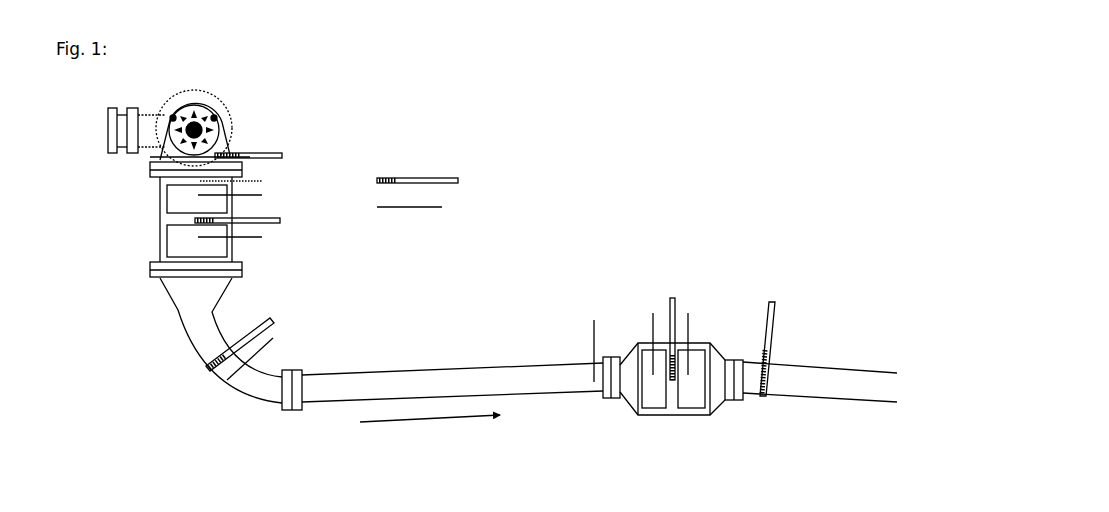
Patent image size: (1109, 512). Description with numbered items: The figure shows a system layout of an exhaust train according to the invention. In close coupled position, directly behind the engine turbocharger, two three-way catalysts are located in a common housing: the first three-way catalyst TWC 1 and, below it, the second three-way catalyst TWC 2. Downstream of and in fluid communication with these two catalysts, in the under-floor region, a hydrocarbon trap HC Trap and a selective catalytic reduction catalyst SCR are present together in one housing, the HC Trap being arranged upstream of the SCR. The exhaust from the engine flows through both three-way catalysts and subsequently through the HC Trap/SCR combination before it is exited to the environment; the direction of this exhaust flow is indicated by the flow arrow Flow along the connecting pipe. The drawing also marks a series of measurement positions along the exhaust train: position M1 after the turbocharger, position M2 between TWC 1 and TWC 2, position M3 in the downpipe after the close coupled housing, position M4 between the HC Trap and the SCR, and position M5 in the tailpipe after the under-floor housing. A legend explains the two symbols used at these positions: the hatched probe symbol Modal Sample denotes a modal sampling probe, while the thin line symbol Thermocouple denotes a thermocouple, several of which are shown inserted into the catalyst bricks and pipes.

The modal sample probe M1 (turbo outlet) M1 is at (273, 152).
The modal sample probe M2 (between TWC 1 and TWC 2) M2 is at (263, 218).
The modal sample probe M3 (downpipe) M3 is at (261, 331).
The modal sample probe M4 (between HC trap and SCR) M4 is at (672, 320).
The modal sample probe M5 (tailpipe) M5 is at (769, 328).
The three-way catalyst TWC 1 is at (180, 197).
The three-way catalyst TWC 2 is at (180, 242).
The HC-trap HC Trap is at (652, 395).
The SCR-catalyst SCR is at (702, 395).
The exhaust flow direction Flow is at (430, 437).
The modal sample probe legend Modal Sample is at (488, 171).
The thermocouple legend Thermocouple is at (488, 209).